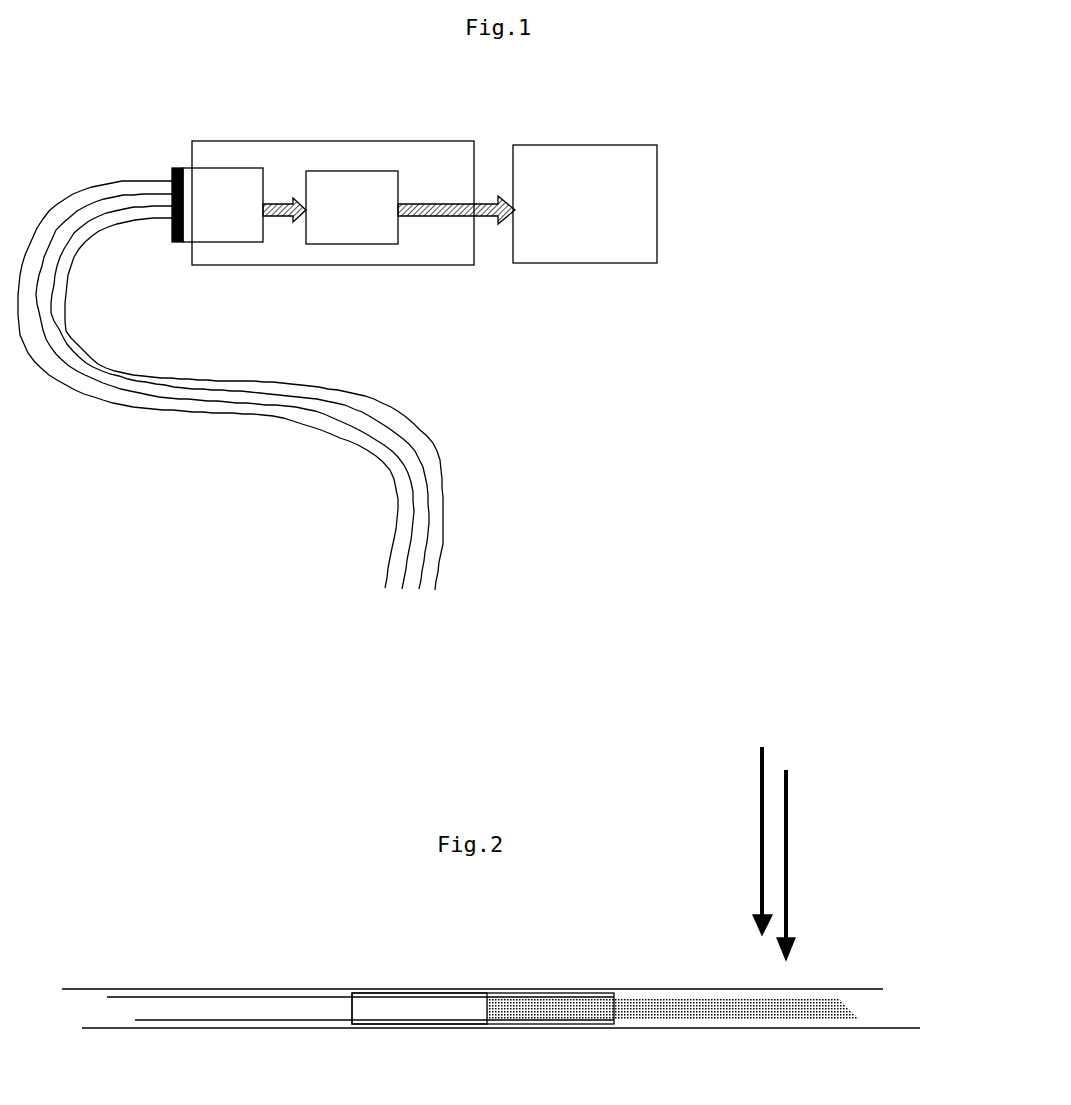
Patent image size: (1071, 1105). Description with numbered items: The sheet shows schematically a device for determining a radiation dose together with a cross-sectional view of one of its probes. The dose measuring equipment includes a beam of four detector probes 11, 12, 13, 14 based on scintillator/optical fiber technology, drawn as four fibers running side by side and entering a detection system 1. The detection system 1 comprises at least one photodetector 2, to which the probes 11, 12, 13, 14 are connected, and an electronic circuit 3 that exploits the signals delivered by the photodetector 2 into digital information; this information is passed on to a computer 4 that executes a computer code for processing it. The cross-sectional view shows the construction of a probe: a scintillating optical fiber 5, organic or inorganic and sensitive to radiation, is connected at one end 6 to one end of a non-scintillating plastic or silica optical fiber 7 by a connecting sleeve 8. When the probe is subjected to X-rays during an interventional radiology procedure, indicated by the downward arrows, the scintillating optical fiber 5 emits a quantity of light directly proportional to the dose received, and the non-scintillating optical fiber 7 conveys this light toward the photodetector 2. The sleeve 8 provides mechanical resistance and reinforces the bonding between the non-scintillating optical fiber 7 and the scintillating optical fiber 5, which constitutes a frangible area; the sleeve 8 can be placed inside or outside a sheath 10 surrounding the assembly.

In FIG. 1, the detection system 1 is at (333, 238).
In FIG. 1, the photodetector 2 is at (175, 179).
In FIG. 1, the electronic circuit 3 is at (309, 172).
In FIG. 1, the computer 4 is at (553, 180).
In FIG. 2, the scintillating optical fiber 5 is at (788, 1016).
In FIG. 2, the end of the scintillating optical fiber 6 is at (500, 1025).
In FIG. 2, the non-scintillating optical fiber 7 is at (305, 1018).
In FIG. 2, the connecting sleeve 8 is at (620, 991).
In FIG. 2, the sheath 10 is at (501, 1066).
In FIG. 1, the detector probe 11 is at (208, 430).
In FIG. 1, the detector probe 12 is at (225, 449).
In FIG. 1, the detector probe 13 is at (240, 465).
In FIG. 1, the detector probe 14 is at (254, 484).